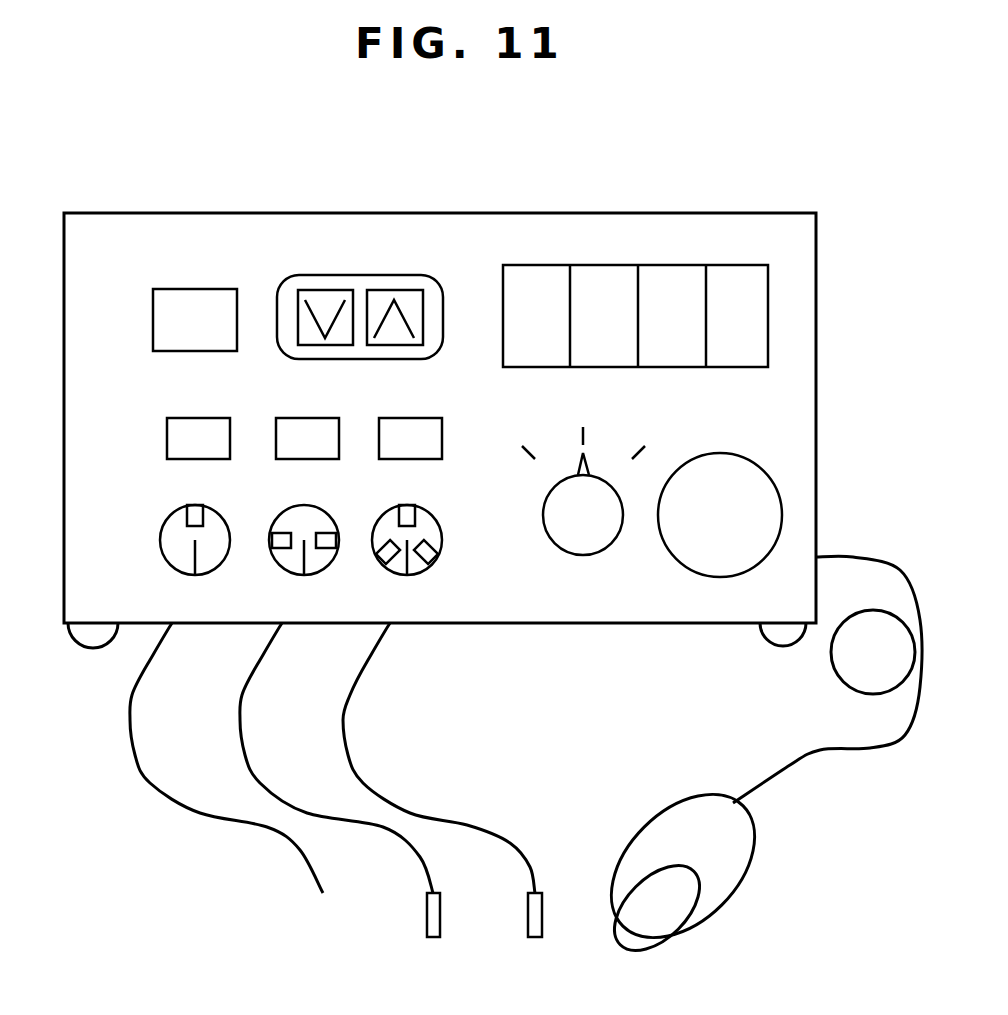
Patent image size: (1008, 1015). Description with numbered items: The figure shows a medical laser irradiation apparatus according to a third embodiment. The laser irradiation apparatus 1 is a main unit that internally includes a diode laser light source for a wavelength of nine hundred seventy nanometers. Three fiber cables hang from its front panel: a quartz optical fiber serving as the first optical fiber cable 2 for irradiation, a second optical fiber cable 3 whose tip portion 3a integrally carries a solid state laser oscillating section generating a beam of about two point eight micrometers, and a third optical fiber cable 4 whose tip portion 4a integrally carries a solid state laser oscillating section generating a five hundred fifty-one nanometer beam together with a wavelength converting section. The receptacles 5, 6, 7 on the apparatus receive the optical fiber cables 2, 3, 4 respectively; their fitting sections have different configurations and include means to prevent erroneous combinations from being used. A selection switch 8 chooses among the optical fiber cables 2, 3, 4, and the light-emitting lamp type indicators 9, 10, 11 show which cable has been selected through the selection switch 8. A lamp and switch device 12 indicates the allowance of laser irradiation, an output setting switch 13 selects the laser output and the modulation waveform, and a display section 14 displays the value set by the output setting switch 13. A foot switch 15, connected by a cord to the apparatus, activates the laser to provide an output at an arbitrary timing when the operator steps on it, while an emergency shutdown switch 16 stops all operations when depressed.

The laser irradiation apparatus 1 is at (745, 213).
The first optical fiber cable 2 is at (133, 720).
The second optical fiber cable 3 is at (243, 720).
The tip portion 3a is at (427, 927).
The third optical fiber cable 4 is at (346, 720).
The tip portion 4a is at (528, 927).
The receptacle 5 is at (230, 545).
The receptacle 6 is at (339, 545).
The receptacle 7 is at (442, 545).
The selection switch 8 is at (583, 555).
The light-emitting lamp type indicator 9 is at (200, 433).
The light-emitting lamp type indicator 10 is at (308, 433).
The light-emitting lamp type indicator 11 is at (411, 433).
The lamp and switch device 12 is at (193, 289).
The output setting switch 13 is at (362, 275).
The display section 14 is at (623, 265).
The foot switch 15 is at (727, 913).
The emergency shutdown switch 16 is at (720, 577).